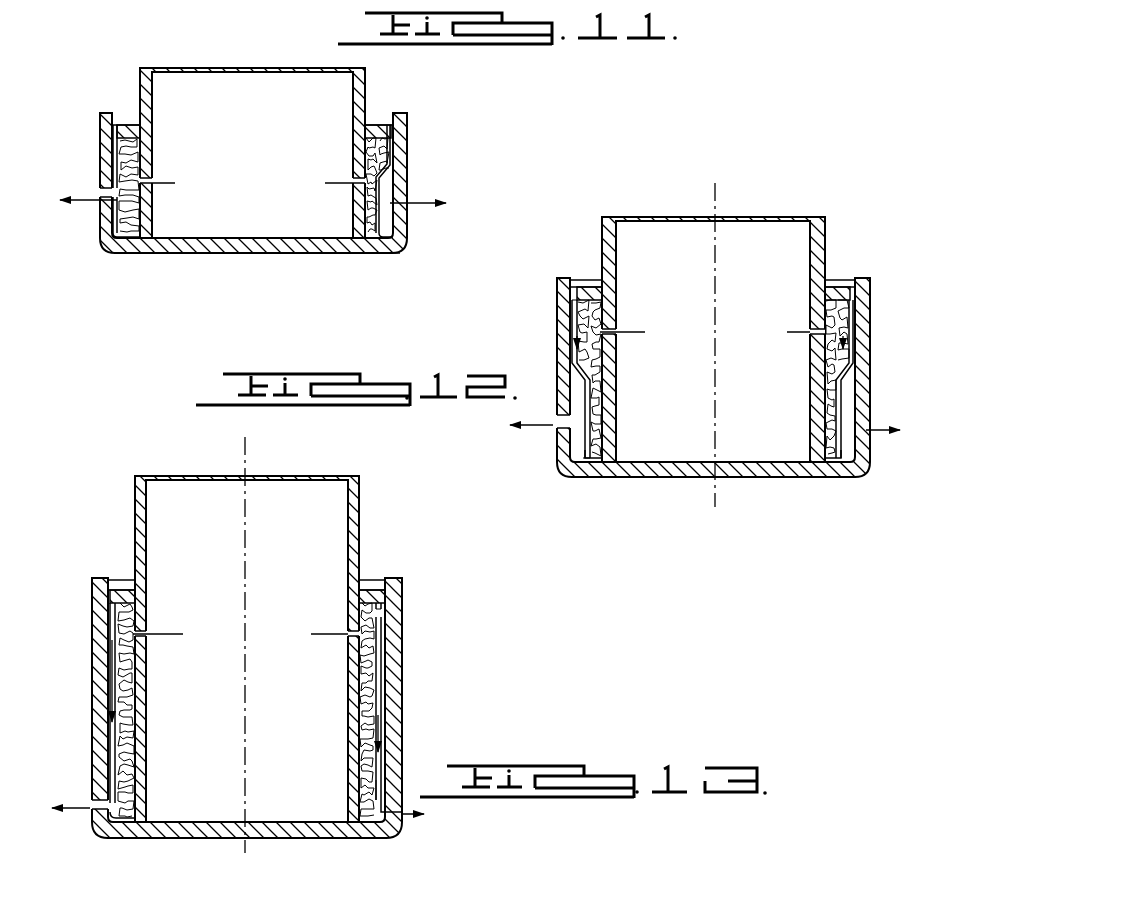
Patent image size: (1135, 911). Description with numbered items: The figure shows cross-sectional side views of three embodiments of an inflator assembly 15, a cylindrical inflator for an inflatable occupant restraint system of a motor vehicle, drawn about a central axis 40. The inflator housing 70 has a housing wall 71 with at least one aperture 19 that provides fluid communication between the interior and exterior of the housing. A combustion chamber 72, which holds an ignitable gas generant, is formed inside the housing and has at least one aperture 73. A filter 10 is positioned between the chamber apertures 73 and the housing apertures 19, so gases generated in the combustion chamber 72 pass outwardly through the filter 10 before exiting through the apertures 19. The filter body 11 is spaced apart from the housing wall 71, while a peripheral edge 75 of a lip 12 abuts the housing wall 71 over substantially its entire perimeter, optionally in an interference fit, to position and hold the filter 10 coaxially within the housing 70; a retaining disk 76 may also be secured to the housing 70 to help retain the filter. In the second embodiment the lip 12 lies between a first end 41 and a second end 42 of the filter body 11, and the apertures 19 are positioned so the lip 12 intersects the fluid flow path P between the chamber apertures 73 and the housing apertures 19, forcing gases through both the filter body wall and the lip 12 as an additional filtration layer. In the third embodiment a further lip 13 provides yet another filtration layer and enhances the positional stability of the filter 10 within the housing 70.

In FIG. 11, the filter 10 is at (392, 182).
In FIG. 11, the filter body 11 is at (385, 227).
In FIG. 12, the filter body 11 is at (116, 822).
In FIG. 13, the filter body 11 is at (587, 440).
In FIG. 11, the lip 12 is at (113, 152).
In FIG. 12, the lip 12 is at (385, 686).
In FIG. 13, the lip 12 is at (580, 370).
In FIG. 12, the lip 13 is at (381, 787).
In FIG. 11, the inflator assembly 15 is at (396, 261).
In FIG. 11, the aperture 19 is at (107, 207).
In FIG. 12, the aperture 19 is at (112, 806).
In FIG. 13, the aperture 19 is at (558, 432).
In FIG. 12, the central axis 40 is at (250, 456).
In FIG. 13, the central axis 40 is at (716, 193).
In FIG. 12, the first end 41 is at (383, 613).
In FIG. 13, the first end 41 is at (588, 313).
In FIG. 12, the second end 42 is at (381, 824).
In FIG. 13, the second end 42 is at (583, 460).
In FIG. 11, the inflator housing 70 is at (411, 119).
In FIG. 12, the inflator housing 70 is at (364, 841).
In FIG. 13, the inflator housing 70 is at (829, 479).
In FIG. 11, the housing wall 71 is at (410, 153).
In FIG. 12, the housing wall 71 is at (96, 588).
In FIG. 13, the housing wall 71 is at (562, 286).
In FIG. 11, the combustion chamber 72 is at (212, 80).
In FIG. 12, the combustion chamber 72 is at (203, 487).
In FIG. 13, the combustion chamber 72 is at (763, 230).
In FIG. 11, the aperture 73 is at (152, 181).
In FIG. 12, the aperture 73 is at (136, 634).
In FIG. 13, the aperture 73 is at (607, 334).
In FIG. 11, the peripheral edge 75 is at (408, 147).
In FIG. 12, the peripheral edge 75 is at (247, 596).
In FIG. 13, the peripheral edge 75 is at (852, 370).
In FIG. 11, the retaining disk 76 is at (120, 126).
In FIG. 12, the retaining disk 76 is at (371, 592).
In FIG. 13, the retaining disk 76 is at (838, 289).
In FIG. 12, the fluid flow path P is at (67, 790).
In FIG. 13, the fluid flow path P is at (517, 415).